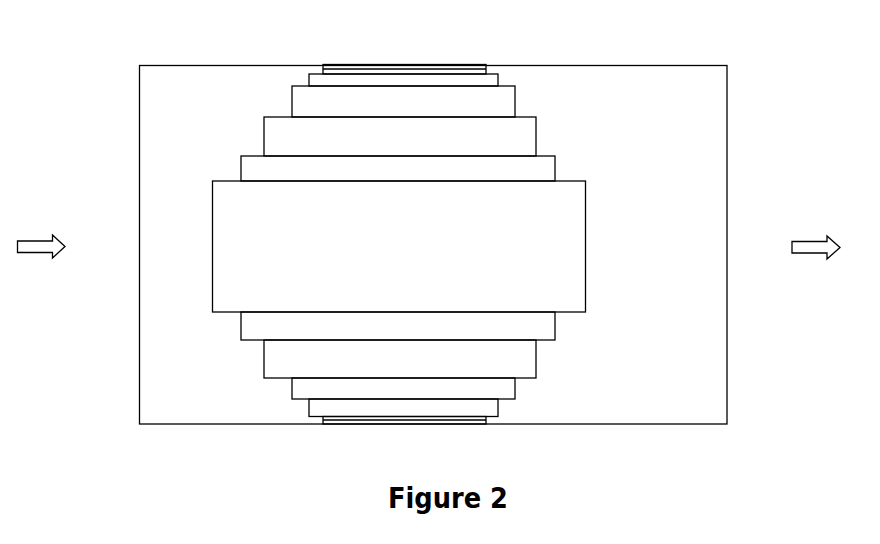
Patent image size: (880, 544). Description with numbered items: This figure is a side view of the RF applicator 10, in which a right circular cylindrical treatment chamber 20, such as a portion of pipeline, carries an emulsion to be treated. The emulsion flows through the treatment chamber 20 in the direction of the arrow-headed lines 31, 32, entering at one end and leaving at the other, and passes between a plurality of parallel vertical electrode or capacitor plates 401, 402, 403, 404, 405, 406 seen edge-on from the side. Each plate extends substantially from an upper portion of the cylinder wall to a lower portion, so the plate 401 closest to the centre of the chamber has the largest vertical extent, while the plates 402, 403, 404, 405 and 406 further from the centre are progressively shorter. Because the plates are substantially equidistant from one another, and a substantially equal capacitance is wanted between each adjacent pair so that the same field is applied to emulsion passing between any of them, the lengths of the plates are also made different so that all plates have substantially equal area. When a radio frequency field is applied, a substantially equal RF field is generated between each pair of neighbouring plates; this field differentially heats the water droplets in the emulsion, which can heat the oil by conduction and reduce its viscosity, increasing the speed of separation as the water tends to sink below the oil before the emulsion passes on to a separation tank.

The RF applicator 10 is at (760, 52).
The treatment chamber 20 is at (630, 65).
The arrow-headed line 31 is at (33, 253).
The arrow-headed line 32 is at (806, 253).
The electrode plate 401 is at (588, 216).
The electrode plate 402 is at (557, 168).
The electrode plate 403 is at (538, 140).
The electrode plate 404 is at (517, 107).
The electrode plate 405 is at (497, 84).
The electrode plate 406 is at (486, 68).